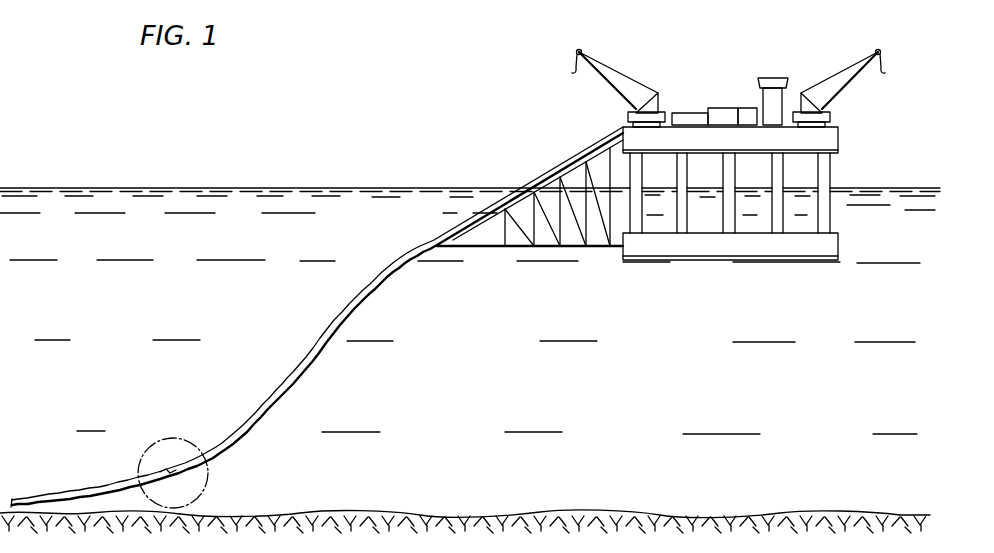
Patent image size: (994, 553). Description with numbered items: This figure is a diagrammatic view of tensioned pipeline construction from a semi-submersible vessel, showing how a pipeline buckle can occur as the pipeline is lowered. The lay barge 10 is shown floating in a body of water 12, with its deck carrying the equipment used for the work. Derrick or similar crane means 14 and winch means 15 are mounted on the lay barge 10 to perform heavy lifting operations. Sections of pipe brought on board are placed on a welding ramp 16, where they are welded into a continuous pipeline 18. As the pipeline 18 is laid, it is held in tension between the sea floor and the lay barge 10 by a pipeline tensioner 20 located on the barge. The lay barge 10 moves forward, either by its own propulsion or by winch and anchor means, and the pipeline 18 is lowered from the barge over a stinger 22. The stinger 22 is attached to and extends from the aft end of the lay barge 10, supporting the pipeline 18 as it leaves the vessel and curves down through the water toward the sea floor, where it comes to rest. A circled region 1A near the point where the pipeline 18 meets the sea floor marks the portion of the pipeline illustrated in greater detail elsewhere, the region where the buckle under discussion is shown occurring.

The lay barge 10 is at (778, 72).
The body of water 12 is at (290, 184).
The crane means 14 is at (595, 53).
The winch means 15 is at (747, 108).
The welding ramp 16 is at (687, 109).
The pipeline 18 is at (63, 500).
The pipeline tensioner 20 is at (731, 107).
The stinger 22 is at (527, 256).
The detail view region 1A is at (206, 488).